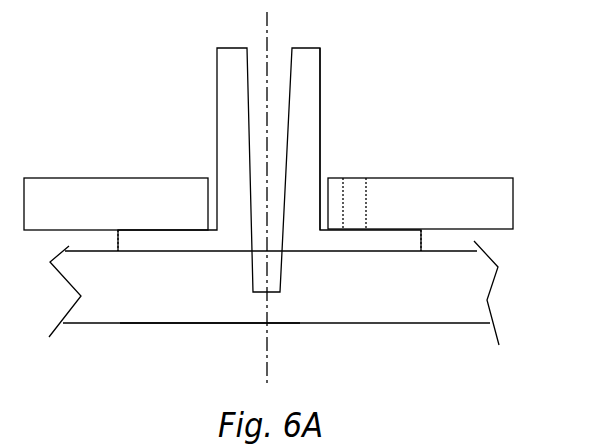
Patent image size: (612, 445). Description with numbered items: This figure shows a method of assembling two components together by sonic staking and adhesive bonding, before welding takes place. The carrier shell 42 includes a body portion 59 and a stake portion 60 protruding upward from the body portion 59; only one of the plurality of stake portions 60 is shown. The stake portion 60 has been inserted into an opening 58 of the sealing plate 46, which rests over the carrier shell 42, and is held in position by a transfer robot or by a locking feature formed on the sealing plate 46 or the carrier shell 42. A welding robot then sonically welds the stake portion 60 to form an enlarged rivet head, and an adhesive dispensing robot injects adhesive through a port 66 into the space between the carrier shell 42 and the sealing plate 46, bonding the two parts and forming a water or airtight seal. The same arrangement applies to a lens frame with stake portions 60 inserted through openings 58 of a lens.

The carrier shell 42 is at (360, 323).
The body portion 59 is at (190, 323).
The opening 58 is at (208, 203).
The stake portion 60 is at (320, 116).
The sealing plate 46 is at (78, 175).
The port 66 is at (367, 203).